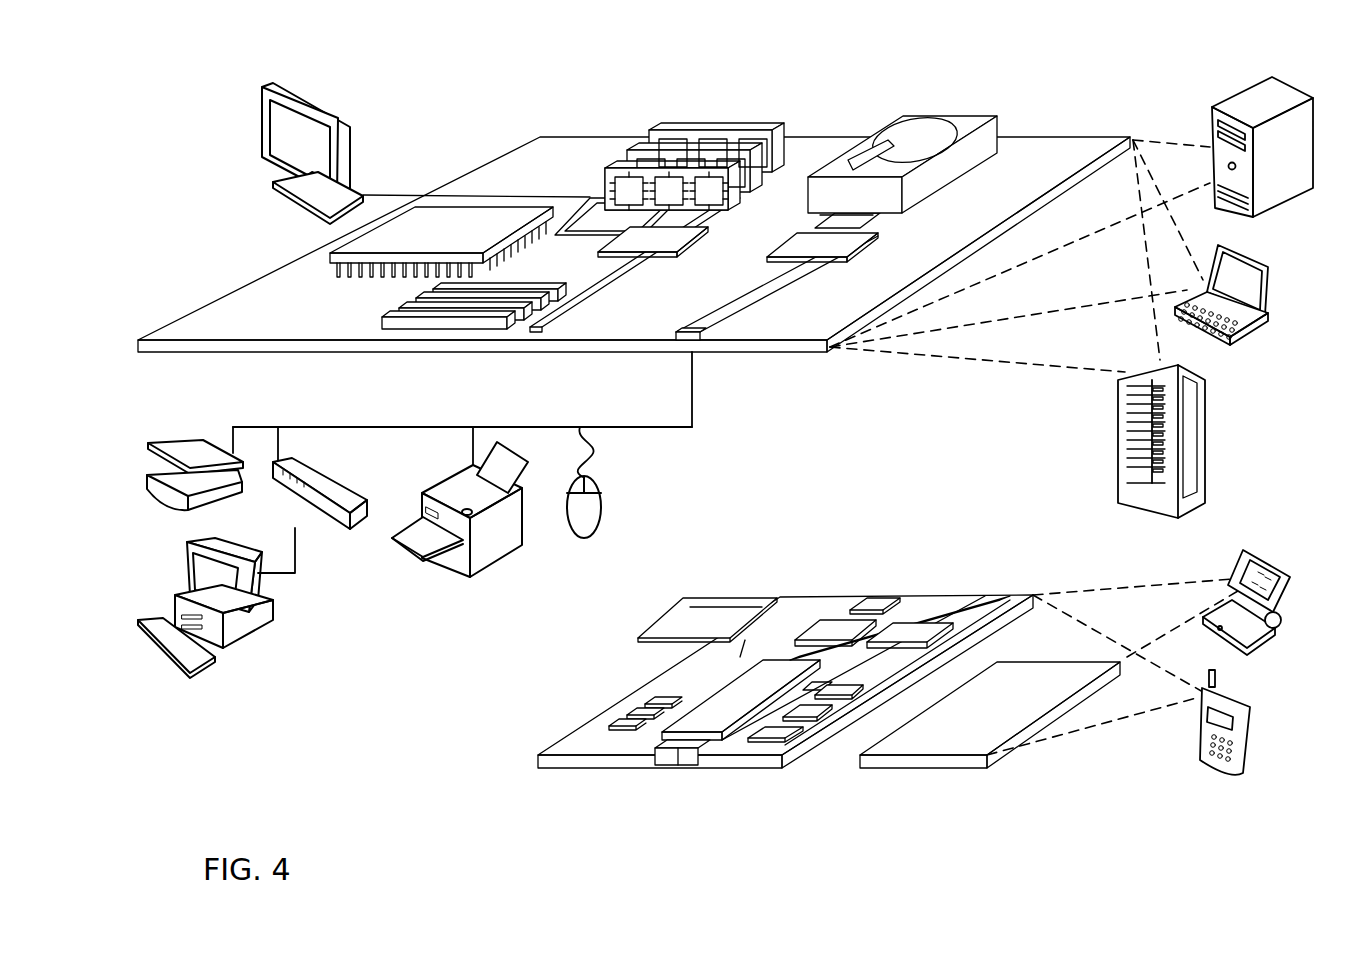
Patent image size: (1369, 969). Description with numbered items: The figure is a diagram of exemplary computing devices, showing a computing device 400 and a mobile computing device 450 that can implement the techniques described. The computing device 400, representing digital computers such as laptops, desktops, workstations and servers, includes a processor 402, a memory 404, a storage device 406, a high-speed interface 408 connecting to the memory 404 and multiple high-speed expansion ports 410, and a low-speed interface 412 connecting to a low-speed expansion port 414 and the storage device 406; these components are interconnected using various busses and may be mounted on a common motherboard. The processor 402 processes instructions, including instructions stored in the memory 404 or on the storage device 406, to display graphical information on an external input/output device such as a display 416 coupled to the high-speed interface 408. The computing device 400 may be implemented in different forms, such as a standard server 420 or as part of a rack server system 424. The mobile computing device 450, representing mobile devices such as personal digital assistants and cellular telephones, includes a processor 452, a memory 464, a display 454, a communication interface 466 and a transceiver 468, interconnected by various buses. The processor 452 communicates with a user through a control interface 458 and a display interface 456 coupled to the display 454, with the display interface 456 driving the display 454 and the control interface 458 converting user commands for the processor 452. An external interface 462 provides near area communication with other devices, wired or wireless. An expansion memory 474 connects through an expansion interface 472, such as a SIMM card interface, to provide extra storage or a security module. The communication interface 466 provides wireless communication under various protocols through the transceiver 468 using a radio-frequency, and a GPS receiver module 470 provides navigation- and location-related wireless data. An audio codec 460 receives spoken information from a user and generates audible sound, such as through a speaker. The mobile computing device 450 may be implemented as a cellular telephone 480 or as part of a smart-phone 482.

The computing device 400 is at (457, 106).
The processor 402 is at (330, 258).
The memory 404 is at (660, 131).
The storage device 406 is at (897, 120).
The high-speed interface 408 is at (625, 238).
The high-speed expansion ports 410 is at (400, 316).
The low-speed interface 412 is at (805, 245).
The low-speed expansion port 414 is at (698, 338).
The display 416 is at (266, 87).
The standard server 420 is at (1212, 122).
The rack server system 424 is at (1118, 465).
The mobile computing device 450 is at (508, 774).
The processor 452 is at (713, 724).
The display 454 is at (955, 740).
The display interface 456 is at (778, 735).
The control interface 458 is at (814, 712).
The audio codec 460 is at (838, 692).
The external interface 462 is at (681, 760).
The memory 464 is at (628, 718).
The communication interface 466 is at (840, 622).
The transceiver 468 is at (912, 632).
The GPS receiver module 470 is at (885, 597).
The expansion interface 472 is at (758, 607).
The expansion memory 474 is at (690, 607).
The cellular telephone 480 is at (1258, 552).
The smart-phone 482 is at (1200, 727).